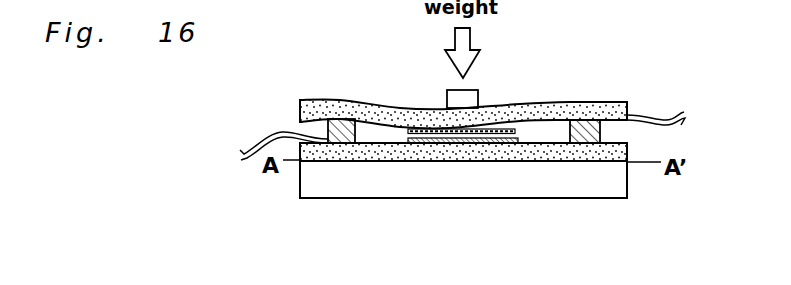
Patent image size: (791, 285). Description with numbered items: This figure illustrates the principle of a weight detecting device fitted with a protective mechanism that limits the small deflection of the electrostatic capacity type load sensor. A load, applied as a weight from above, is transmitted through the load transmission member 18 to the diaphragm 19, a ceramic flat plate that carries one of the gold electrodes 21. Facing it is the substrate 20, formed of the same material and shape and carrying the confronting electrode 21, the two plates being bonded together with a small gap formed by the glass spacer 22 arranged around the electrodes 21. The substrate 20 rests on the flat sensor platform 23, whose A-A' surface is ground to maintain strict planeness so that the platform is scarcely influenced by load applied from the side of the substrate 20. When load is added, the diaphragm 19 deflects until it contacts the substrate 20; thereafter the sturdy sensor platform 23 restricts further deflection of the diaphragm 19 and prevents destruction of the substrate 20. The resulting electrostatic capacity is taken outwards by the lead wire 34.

The load transmission member 18 is at (468, 97).
The diaphragm 19 is at (380, 106).
The substrate 20 is at (397, 152).
The gold electrodes 21 is at (495, 143).
The glass spacer 22 is at (590, 143).
The sensor platform 23 is at (352, 183).
The lead wire 34 is at (279, 133).